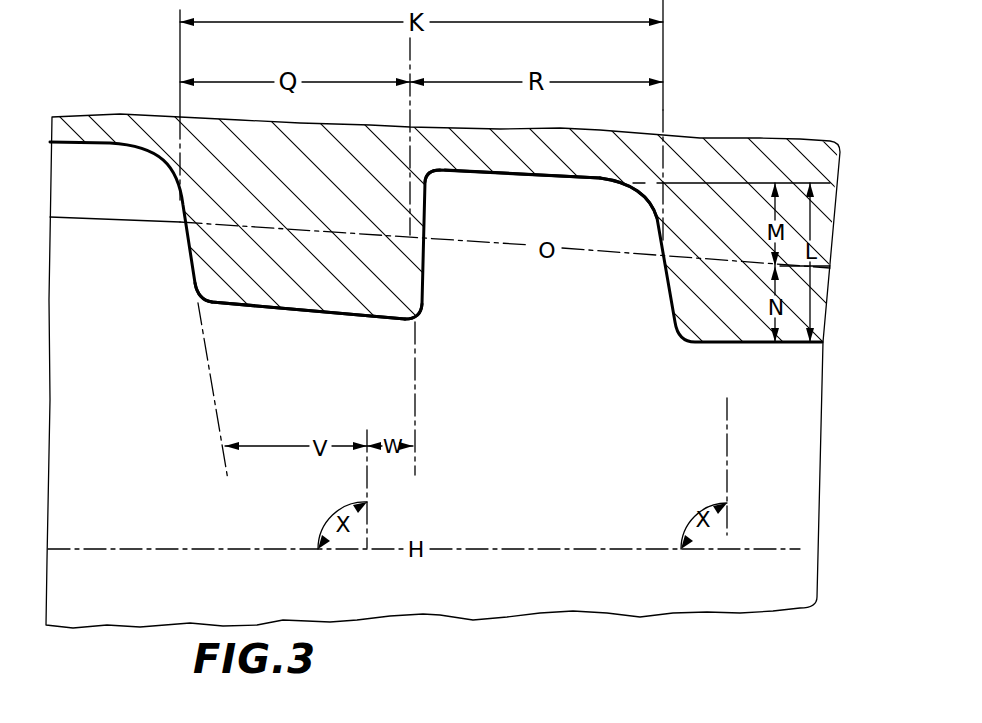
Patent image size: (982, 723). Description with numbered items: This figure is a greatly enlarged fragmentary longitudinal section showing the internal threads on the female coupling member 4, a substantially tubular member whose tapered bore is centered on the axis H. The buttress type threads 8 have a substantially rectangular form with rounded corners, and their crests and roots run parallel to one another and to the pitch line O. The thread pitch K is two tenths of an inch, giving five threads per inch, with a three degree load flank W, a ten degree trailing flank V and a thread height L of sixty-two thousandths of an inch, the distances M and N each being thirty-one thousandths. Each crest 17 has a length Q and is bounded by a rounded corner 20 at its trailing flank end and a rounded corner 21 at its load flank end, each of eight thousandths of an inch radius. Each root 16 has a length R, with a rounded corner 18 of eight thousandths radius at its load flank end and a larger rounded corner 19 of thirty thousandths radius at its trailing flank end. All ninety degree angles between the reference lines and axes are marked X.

The female coupling member 4 is at (780, 137).
The buttress type threads 8 is at (205, 203).
The root 16 is at (586, 168).
The crest 17 is at (313, 295).
The rounded corner 18 is at (437, 178).
The rounded corner 19 is at (636, 204).
The rounded corner 20 is at (208, 288).
The rounded corner 21 is at (410, 303).